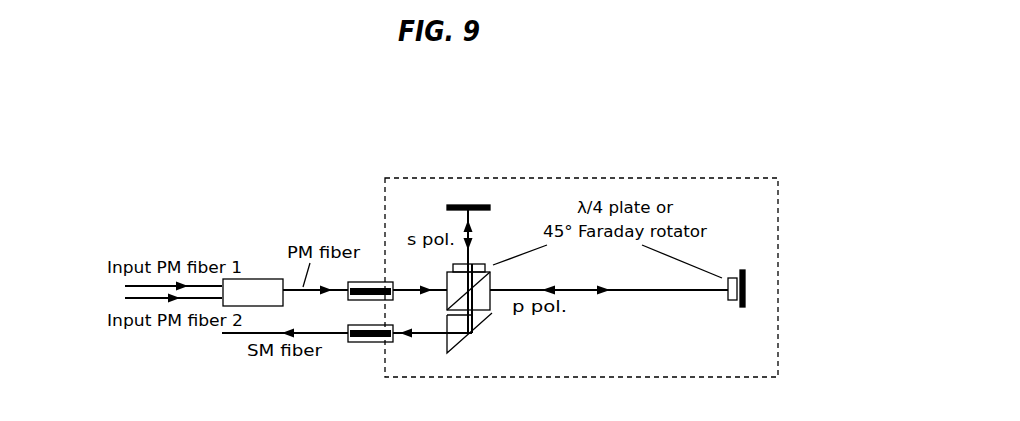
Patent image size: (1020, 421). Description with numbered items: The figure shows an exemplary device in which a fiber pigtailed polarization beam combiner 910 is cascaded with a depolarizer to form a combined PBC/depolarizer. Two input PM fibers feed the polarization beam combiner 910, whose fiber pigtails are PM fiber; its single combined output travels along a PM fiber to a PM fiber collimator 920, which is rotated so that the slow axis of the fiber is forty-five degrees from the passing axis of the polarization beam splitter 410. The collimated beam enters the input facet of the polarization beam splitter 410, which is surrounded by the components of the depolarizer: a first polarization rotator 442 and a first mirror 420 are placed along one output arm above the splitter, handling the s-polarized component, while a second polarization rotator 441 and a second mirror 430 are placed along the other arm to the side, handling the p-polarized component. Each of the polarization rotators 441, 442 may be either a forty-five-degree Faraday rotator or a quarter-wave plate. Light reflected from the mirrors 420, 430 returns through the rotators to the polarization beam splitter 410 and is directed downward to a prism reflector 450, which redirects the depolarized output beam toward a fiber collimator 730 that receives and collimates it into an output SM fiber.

The fiber pigtailed polarization beam combiner 910 is at (262, 272).
The PM fiber collimator 920 is at (373, 280).
The fiber collimator 730 is at (358, 353).
The mirror 420 is at (490, 206).
The polarization rotator 442 is at (478, 264).
The polarization beam splitter 410 is at (497, 308).
The prism reflector 450 is at (468, 350).
The polarization rotator 441 is at (736, 276).
The mirror 430 is at (747, 293).